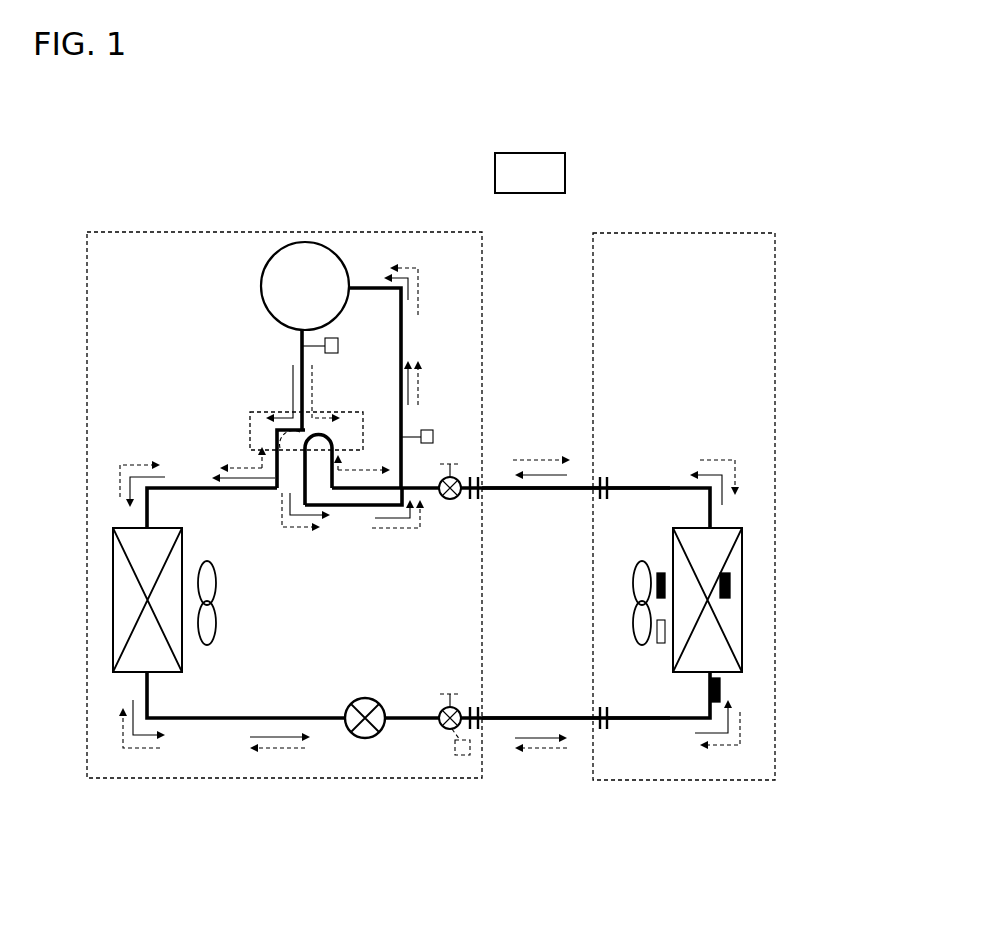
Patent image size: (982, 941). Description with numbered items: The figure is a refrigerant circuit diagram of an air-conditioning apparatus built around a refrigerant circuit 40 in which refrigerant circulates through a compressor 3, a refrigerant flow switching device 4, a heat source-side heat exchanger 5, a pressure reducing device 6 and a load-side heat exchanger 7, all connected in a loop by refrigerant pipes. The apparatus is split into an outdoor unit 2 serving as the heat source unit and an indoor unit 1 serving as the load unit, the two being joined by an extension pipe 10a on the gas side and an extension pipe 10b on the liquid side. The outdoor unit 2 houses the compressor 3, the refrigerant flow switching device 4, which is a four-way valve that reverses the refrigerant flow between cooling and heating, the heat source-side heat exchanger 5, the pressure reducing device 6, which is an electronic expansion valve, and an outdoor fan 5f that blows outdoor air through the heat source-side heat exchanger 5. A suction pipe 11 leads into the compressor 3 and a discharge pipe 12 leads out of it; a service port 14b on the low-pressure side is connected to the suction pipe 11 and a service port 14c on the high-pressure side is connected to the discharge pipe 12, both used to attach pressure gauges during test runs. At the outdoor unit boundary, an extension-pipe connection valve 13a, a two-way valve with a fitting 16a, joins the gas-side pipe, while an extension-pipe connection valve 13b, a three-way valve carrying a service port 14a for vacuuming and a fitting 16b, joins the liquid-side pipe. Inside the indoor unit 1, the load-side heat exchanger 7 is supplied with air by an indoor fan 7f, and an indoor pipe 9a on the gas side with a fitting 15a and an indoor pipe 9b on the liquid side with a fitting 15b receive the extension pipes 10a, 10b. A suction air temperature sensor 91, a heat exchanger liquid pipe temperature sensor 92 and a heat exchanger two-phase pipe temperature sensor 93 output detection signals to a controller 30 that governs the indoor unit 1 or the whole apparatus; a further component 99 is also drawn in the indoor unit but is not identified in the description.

The indoor unit 1 is at (655, 781).
The outdoor unit 2 is at (205, 779).
The compressor 3 is at (262, 292).
The refrigerant flow switching device 4 is at (250, 426).
The heat source-side heat exchanger 5 is at (113, 596).
The outdoor fan 5f is at (218, 596).
The pressure reducing device 6 is at (379, 703).
The load-side heat exchanger 7 is at (742, 631).
The indoor fan 7f is at (633, 572).
The indoor pipe 9a is at (640, 486).
The indoor pipe 9b is at (640, 720).
The extension pipe 10a is at (492, 486).
The extension pipe 10b is at (522, 715).
The suction pipe 11 is at (355, 283).
The discharge pipe 12 is at (298, 355).
The extension-pipe connection valve 13a is at (458, 498).
The extension-pipe connection valve 13b is at (446, 729).
The service port 14a is at (460, 757).
The service port 14b is at (433, 430).
The service port 14c is at (338, 345).
The fitting 15a is at (608, 483).
The fitting 15b is at (603, 731).
The fitting 16a is at (480, 497).
The fitting 16b is at (476, 705).
The controller 30 is at (565, 178).
The refrigerant circuit 40 is at (168, 462).
The suction air temperature sensor 91 is at (661, 573).
The heat exchanger liquid pipe temperature sensor 92 is at (722, 690).
The heat exchanger two-phase pipe temperature sensor 93 is at (730, 586).
The outdoor air temperature sensor 99 is at (657, 644).